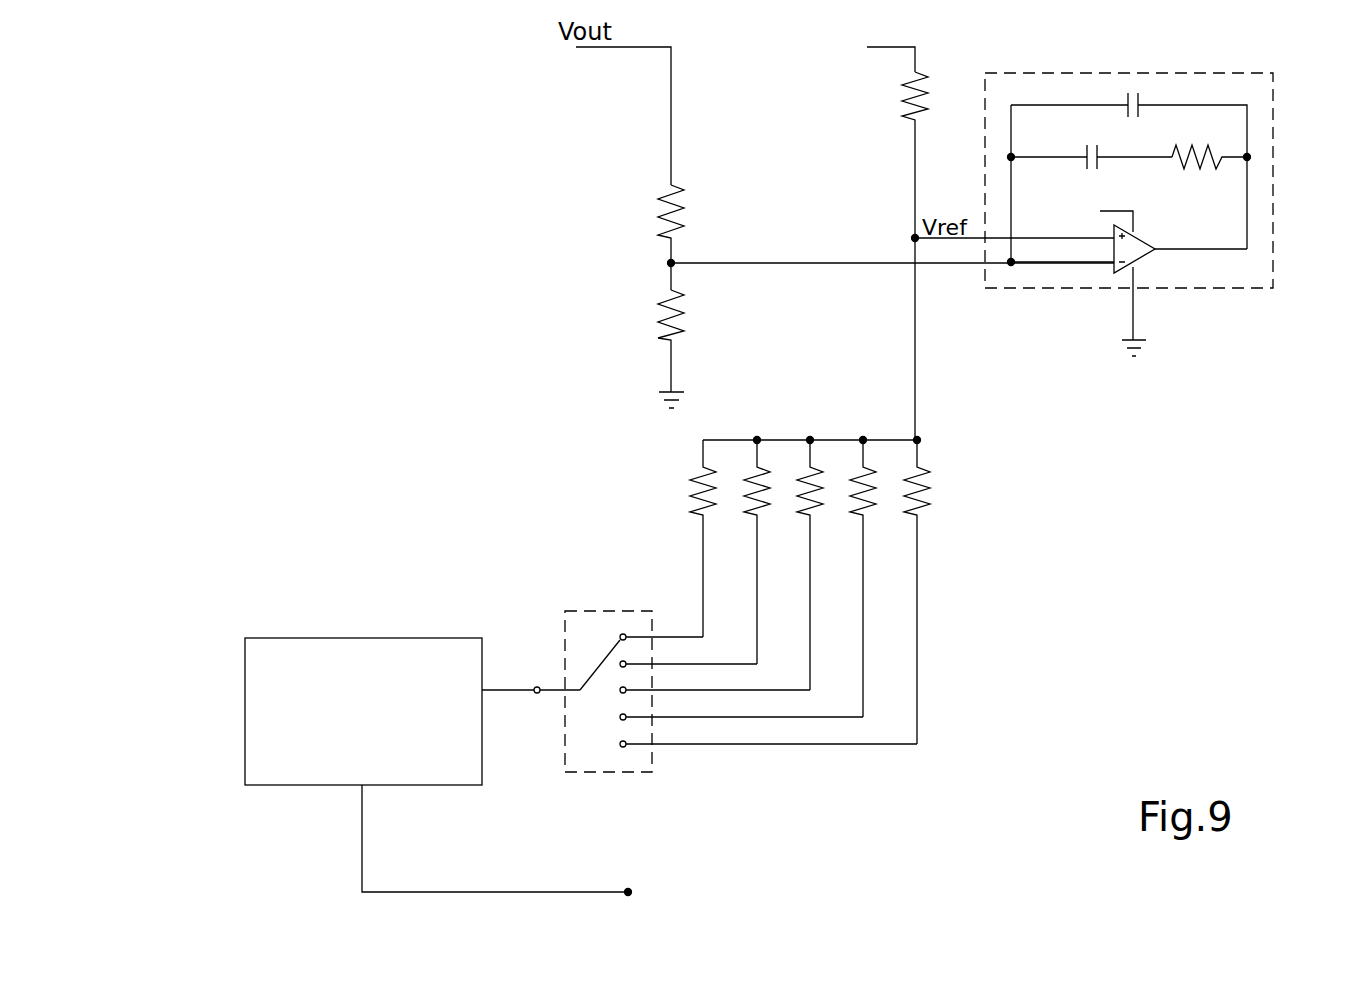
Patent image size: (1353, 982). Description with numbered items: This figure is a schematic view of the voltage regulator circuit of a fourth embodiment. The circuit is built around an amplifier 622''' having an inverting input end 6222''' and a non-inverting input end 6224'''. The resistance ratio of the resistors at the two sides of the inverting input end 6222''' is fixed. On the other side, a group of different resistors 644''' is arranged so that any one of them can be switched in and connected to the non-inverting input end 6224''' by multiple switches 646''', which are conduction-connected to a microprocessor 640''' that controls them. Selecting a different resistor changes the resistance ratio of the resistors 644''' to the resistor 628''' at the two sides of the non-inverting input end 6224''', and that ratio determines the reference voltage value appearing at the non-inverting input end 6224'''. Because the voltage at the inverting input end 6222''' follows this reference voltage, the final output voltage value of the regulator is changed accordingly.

The resistor 628''' is at (858, 243).
The amplifier 622''' is at (1115, 237).
The inverting input end 6222''' is at (1014, 297).
The non-inverting input end 6224''' is at (1024, 331).
The resistors 644''' is at (872, 591).
The switches 646''' is at (725, 728).
The microprocessor 640''' is at (438, 715).